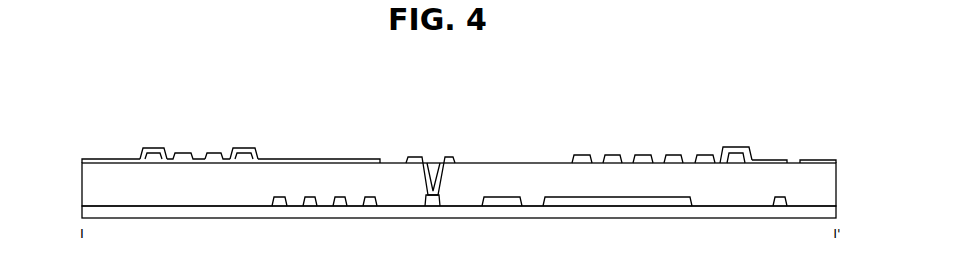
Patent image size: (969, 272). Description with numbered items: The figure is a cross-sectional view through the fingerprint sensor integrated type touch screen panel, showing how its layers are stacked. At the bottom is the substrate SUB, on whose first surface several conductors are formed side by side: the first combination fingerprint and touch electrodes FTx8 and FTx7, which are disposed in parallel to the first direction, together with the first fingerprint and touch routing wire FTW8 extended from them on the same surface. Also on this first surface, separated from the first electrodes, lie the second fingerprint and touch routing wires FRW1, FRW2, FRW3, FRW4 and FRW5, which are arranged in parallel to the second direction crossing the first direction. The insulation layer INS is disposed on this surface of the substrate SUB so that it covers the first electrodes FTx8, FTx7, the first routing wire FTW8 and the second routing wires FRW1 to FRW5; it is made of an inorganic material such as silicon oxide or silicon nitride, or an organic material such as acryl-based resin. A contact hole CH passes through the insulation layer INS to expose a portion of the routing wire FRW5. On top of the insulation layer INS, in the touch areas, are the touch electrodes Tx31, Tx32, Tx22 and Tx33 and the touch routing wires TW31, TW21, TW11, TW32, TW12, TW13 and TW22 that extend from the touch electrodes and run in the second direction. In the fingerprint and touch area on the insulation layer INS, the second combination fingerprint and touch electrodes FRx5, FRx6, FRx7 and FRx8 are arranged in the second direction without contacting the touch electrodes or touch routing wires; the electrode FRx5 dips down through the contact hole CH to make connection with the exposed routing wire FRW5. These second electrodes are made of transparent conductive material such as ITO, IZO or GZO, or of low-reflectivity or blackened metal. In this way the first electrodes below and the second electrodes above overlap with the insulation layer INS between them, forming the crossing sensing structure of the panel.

The substrate SUB is at (88, 212).
The insulation layer INS is at (88, 183).
The touch electrode Tx31 is at (108, 159).
The touch electrode Tx32 is at (303, 159).
The touch electrode Tx22 is at (768, 160).
The touch electrode Tx33 is at (818, 160).
The touch routing wire TW31 is at (152, 148).
The touch routing wire TW21 is at (183, 153).
The touch routing wire TW11 is at (213, 153).
The touch routing wire TW32 is at (245, 148).
The touch routing wire TW12 is at (674, 155).
The touch routing wire TW13 is at (705, 155).
The touch routing wire TW22 is at (736, 147).
The second combination fingerprint and touch electrode FRx5 is at (414, 157).
The second combination fingerprint and touch electrode FRx6 is at (582, 155).
The second combination fingerprint and touch electrode FRx7 is at (612, 155).
The second combination fingerprint and touch electrode FRx8 is at (643, 155).
The contact hole CH is at (432, 154).
The second fingerprint and touch routing wire FRW1 is at (279, 206).
The second fingerprint and touch routing wire FRW2 is at (310, 206).
The second fingerprint and touch routing wire FRW3 is at (340, 206).
The second fingerprint and touch routing wire FRW4 is at (370, 206).
The second fingerprint and touch routing wire FRW5 is at (432, 206).
The first combination fingerprint and touch electrode FTx8 is at (500, 206).
The first combination fingerprint and touch electrode FTx7 is at (574, 206).
The first fingerprint and touch routing wire FTW8 is at (780, 206).